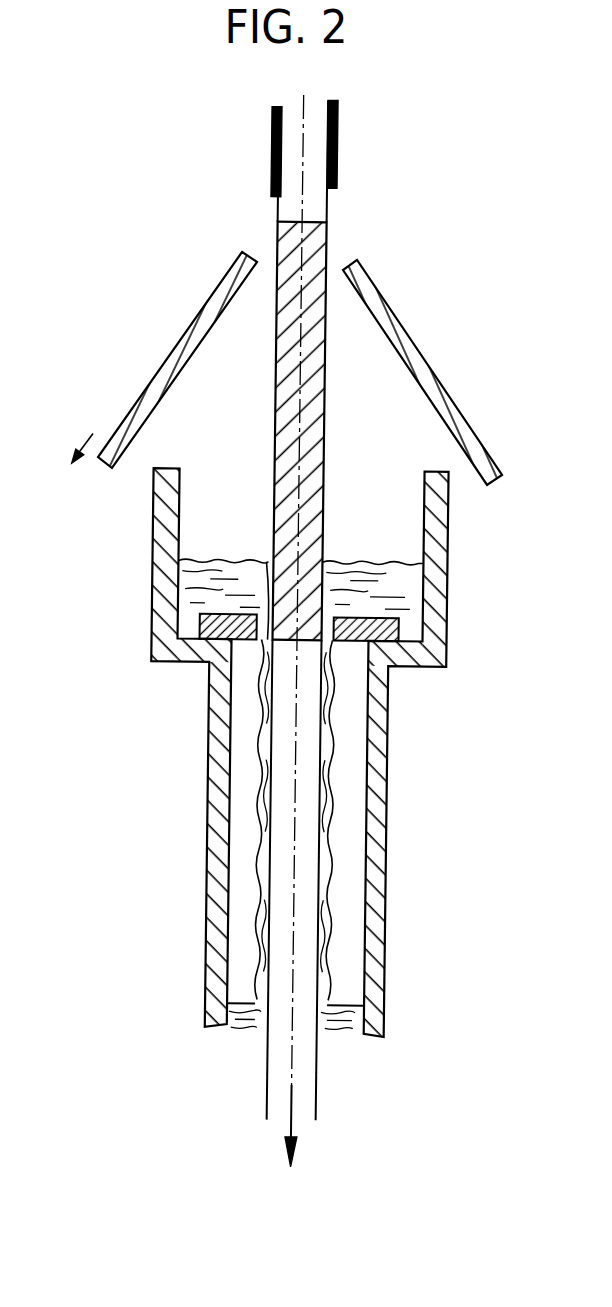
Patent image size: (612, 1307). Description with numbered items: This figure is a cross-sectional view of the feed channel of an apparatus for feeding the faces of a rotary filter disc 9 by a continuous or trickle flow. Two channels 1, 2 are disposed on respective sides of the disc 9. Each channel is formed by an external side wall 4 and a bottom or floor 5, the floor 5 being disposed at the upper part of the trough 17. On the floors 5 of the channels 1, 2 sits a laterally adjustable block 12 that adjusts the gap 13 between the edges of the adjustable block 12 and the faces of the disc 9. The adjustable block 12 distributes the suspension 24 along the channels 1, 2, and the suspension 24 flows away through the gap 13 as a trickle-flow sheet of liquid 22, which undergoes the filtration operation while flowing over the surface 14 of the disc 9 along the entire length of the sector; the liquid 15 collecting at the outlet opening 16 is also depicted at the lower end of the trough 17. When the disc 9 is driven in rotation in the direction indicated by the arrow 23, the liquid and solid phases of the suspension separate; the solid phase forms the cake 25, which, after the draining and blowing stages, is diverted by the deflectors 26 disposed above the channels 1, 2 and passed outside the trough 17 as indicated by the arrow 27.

The channel 1 is at (396, 499).
The channel 2 is at (204, 499).
The external side wall 4 is at (432, 540).
The floor 5 is at (428, 666).
The rotary filter disc 9 is at (322, 193).
The adjustable block 12 is at (213, 623).
The gap 13 is at (257, 567).
The surface of the disc 14 is at (265, 807).
The liquid at outlet 15 is at (257, 1031).
The outlet opening 16 is at (248, 1003).
The trough 17 is at (210, 883).
The trickle-flow sheet of liquid 22 is at (332, 742).
The arrow 23 is at (298, 1085).
The suspension 24 is at (266, 562).
The cake 25 is at (332, 128).
The deflectors 26 is at (395, 339).
The arrow 27 is at (91, 436).